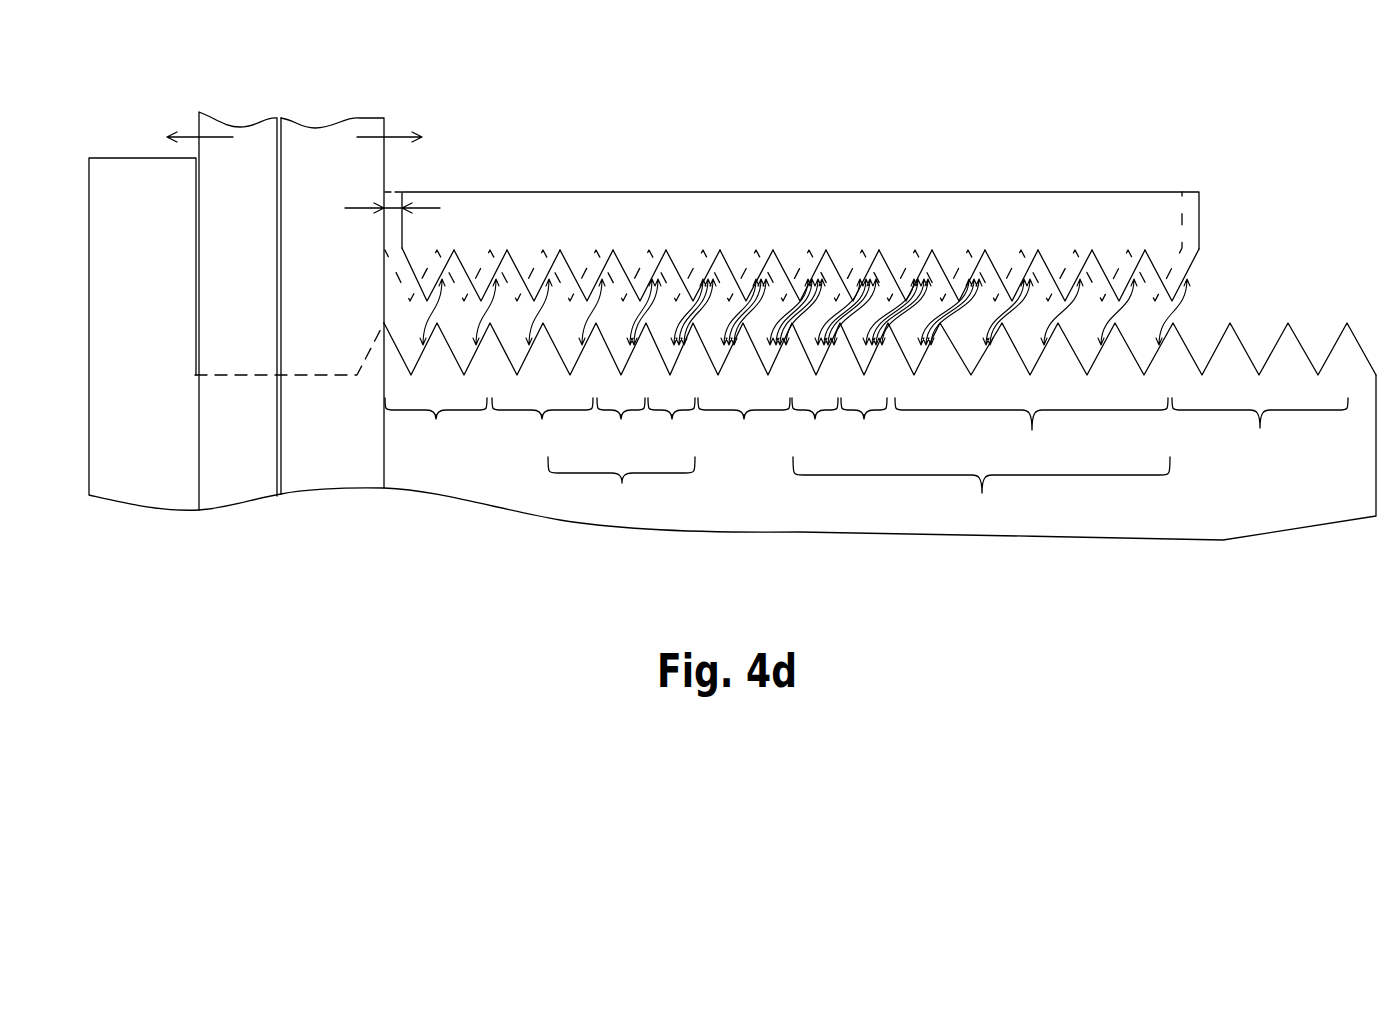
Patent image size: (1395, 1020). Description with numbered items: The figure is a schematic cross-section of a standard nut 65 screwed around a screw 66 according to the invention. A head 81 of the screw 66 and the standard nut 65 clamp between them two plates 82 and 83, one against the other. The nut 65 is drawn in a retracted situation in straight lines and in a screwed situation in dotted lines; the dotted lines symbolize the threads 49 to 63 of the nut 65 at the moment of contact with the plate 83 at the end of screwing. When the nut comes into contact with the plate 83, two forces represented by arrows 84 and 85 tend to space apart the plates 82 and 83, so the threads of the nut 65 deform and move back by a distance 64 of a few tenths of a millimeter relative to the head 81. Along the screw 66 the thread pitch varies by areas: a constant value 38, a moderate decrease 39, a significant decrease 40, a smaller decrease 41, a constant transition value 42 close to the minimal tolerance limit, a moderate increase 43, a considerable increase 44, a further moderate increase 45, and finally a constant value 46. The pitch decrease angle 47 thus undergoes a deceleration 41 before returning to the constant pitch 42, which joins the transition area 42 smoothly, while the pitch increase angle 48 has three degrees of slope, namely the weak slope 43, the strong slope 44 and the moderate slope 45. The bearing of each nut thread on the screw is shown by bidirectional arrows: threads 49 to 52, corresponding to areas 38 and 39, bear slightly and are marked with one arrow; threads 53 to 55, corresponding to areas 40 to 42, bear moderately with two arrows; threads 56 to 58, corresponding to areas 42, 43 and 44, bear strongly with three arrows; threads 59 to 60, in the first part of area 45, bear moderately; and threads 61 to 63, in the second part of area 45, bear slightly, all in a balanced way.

The constant pitch value area 38 is at (436, 425).
The moderate pitch decrease area 39 is at (542, 425).
The significant pitch decrease area 40 is at (621, 424).
The smaller pitch decrease area 41 is at (671, 424).
The constant pitch transition area 42 is at (744, 426).
The moderate pitch increase area 43 is at (815, 425).
The considerable pitch increase area 44 is at (864, 425).
The moderate pitch increase area 45 is at (1031, 429).
The constant pitch value area 46 is at (1260, 429).
The pitch decrease angle 47 is at (621, 486).
The pitch increase angle 48 is at (981, 491).
The nut thread 49 is at (428, 274).
The nut thread 50 is at (480, 275).
The nut thread 51 is at (533, 275).
The nut thread 52 is at (586, 275).
The nut thread 53 is at (639, 275).
The nut thread 54 is at (693, 275).
The nut thread 55 is at (746, 275).
The nut thread 56 is at (799, 275).
The nut thread 57 is at (852, 275).
The nut thread 58 is at (905, 275).
The nut thread 59 is at (958, 275).
The nut thread 60 is at (1011, 275).
The nut thread 61 is at (1065, 275).
The nut thread 62 is at (1118, 275).
The nut thread 63 is at (1172, 275).
The distance 64 is at (433, 208).
The standard nut 65 is at (792, 209).
The screw 66 is at (535, 485).
The head 81 is at (133, 462).
The plate 82 is at (233, 457).
The plate 83 is at (312, 438).
The arrow 84 is at (192, 133).
The arrow 85 is at (398, 134).